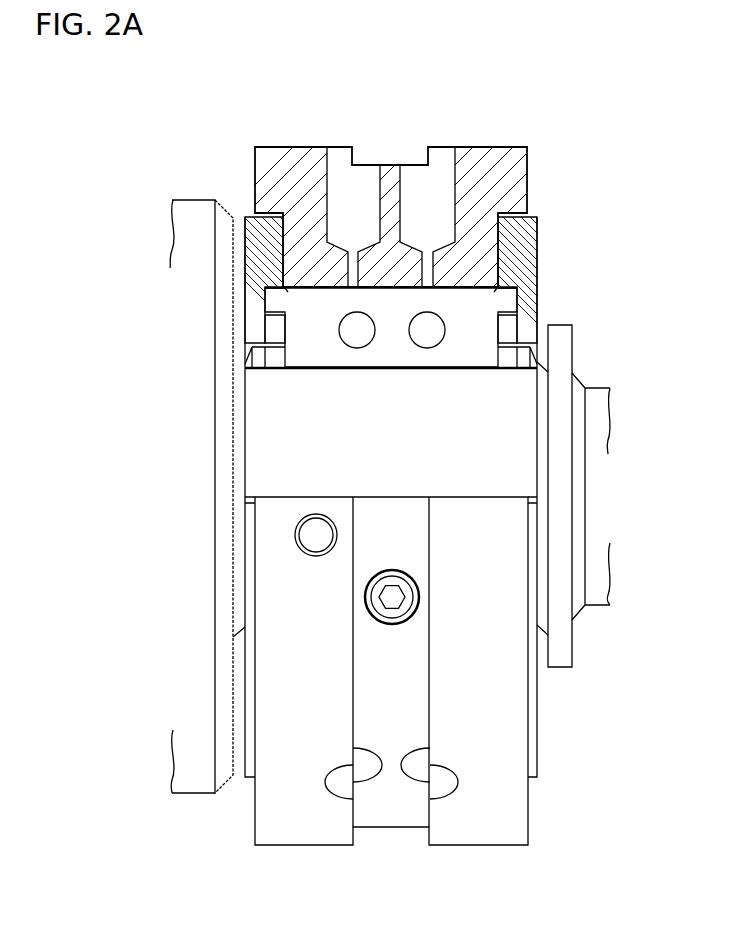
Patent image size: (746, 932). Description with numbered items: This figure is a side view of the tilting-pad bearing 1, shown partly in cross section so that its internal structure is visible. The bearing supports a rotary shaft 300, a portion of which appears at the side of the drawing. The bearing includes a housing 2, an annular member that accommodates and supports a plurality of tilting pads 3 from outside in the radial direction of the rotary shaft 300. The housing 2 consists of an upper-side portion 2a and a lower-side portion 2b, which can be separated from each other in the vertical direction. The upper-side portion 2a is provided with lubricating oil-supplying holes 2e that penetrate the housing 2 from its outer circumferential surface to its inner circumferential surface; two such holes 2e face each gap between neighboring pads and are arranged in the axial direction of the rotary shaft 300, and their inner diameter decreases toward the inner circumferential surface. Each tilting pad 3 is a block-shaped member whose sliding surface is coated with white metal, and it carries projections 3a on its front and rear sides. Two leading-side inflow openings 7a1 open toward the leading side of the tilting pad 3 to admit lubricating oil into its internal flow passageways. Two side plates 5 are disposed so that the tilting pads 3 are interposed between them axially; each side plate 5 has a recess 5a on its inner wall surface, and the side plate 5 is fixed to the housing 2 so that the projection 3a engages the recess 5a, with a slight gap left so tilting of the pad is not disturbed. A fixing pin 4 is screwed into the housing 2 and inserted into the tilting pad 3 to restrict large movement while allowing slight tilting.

The tilting-pad bearing 1 is at (398, 124).
The housing 2 is at (536, 744).
The upper-side portion 2a is at (443, 170).
The lower-side portion 2b is at (522, 813).
The lubricating oil-supplying holes 2e is at (330, 166).
The tilting pad 3 is at (394, 371).
The projections 3a is at (277, 330).
The fixing pin 4 is at (410, 597).
The side plates 5 is at (242, 246).
The recess 5a is at (267, 303).
The leading-side inflow opening 7a1 is at (347, 333).
The rotary shaft 300 is at (255, 462).